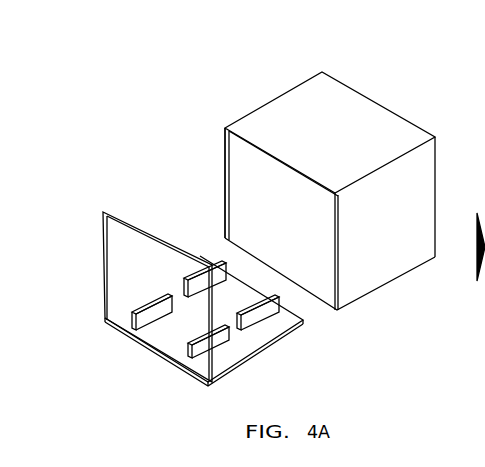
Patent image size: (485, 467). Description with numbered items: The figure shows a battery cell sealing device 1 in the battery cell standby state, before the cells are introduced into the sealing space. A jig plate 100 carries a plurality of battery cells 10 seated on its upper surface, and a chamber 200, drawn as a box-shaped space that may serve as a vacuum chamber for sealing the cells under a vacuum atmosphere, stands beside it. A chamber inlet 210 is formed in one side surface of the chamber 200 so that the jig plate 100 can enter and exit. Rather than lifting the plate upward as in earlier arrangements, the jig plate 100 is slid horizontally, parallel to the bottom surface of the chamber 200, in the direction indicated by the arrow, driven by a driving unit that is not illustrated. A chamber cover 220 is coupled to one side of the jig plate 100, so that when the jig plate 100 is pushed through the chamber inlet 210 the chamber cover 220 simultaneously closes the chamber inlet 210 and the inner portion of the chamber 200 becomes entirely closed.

The battery cell sealing device 1 is at (184, 29).
The chamber 200 is at (335, 112).
The chamber inlet 210 is at (222, 130).
The chamber cover 220 is at (103, 215).
The jig plate 100 is at (152, 351).
The battery cells 10 is at (222, 267).